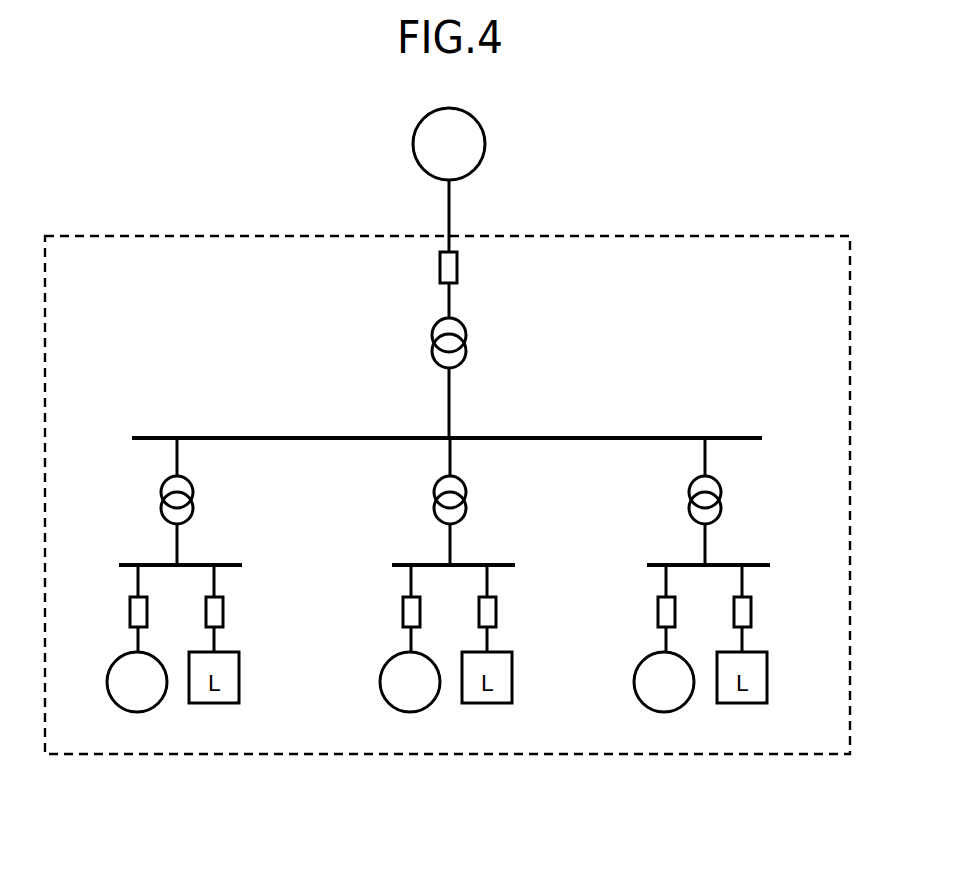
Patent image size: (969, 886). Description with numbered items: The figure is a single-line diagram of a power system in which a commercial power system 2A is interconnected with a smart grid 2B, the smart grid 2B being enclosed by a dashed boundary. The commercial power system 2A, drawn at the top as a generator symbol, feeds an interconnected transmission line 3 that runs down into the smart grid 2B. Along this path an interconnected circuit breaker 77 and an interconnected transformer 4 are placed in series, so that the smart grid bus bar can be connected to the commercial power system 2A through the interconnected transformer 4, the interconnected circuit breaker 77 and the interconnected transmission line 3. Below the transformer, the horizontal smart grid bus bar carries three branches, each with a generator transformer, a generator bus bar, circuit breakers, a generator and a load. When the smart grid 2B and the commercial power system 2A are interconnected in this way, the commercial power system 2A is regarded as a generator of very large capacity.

The commercial power system 2A is at (480, 121).
The smart grid 2B is at (745, 238).
The interconnected transmission line 3 is at (451, 205).
The interconnected circuit breaker 77 is at (458, 269).
The interconnected transformer 4 is at (463, 333).